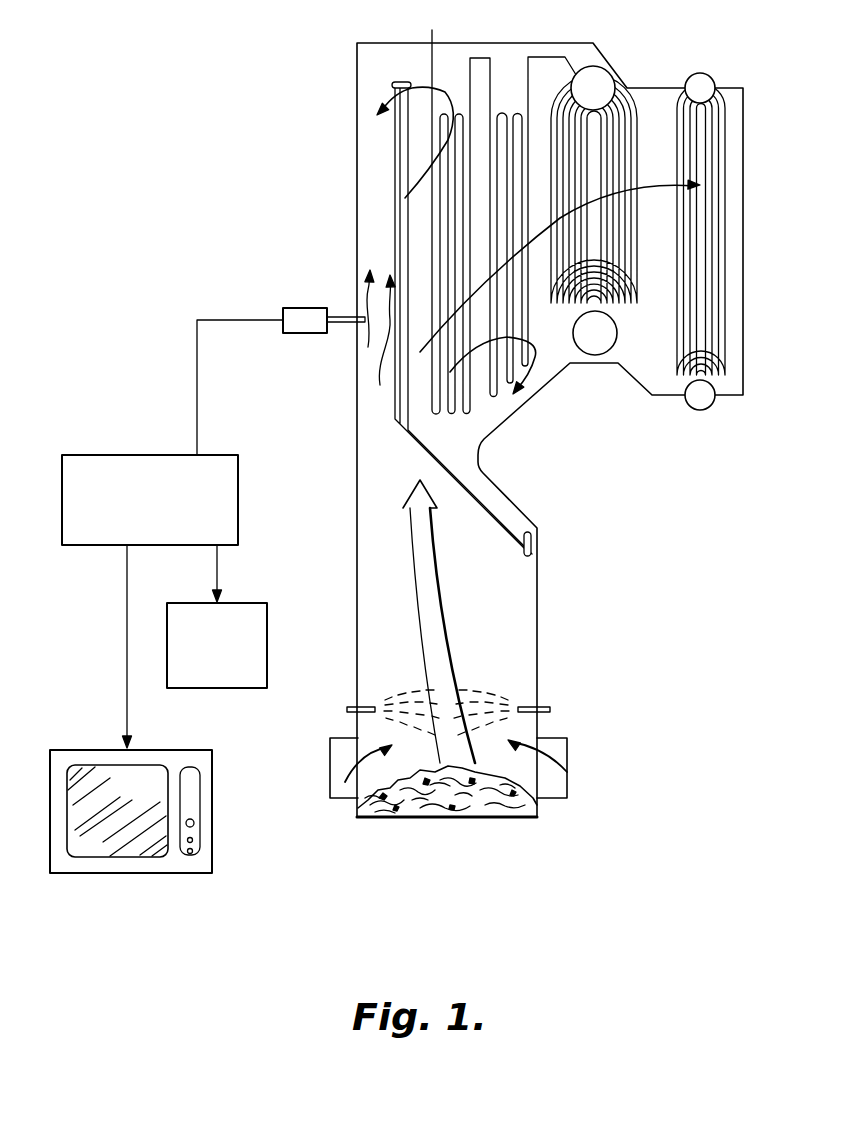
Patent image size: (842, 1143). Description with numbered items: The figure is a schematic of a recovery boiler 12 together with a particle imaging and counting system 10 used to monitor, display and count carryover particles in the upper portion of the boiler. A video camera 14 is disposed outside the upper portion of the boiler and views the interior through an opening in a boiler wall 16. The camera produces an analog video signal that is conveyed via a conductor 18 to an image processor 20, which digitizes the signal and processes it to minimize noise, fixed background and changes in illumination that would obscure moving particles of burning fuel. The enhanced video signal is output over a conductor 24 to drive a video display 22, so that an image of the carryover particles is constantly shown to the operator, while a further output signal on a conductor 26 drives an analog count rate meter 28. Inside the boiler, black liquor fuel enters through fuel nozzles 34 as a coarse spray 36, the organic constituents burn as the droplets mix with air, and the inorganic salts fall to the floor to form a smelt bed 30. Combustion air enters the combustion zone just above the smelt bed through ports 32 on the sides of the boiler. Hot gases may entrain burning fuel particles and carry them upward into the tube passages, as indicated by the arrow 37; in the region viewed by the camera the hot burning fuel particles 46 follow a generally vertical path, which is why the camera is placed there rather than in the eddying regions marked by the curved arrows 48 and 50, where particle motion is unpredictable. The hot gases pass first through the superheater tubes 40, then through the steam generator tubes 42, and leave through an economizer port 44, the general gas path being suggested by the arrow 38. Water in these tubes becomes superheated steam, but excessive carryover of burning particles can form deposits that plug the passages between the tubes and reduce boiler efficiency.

The particle imaging and counting system 10 is at (175, 371).
The recovery boiler 12 is at (556, 575).
The video camera 14 is at (297, 308).
The boiler wall 16 is at (357, 345).
The conductor 18 is at (197, 402).
The image processor 20 is at (238, 509).
The video display 22 is at (73, 753).
The conductor 24 is at (127, 655).
The conductor 26 is at (218, 567).
The analog count rate meter 28 is at (223, 690).
The smelt bed 30 is at (432, 812).
The ports 32 is at (347, 760).
The fuel nozzles 34 is at (372, 708).
The coarse spray 36 is at (394, 698).
The arrow 37 is at (423, 618).
The gas flow arrow to tube bank 38 is at (640, 187).
The superheater tubes 40 is at (482, 150).
The steam generator tubes 42 is at (630, 100).
The economizer port 44 is at (730, 207).
The hot burning fuel particles 46 is at (380, 314).
The curved arrow 48 is at (420, 82).
The curved arrow 50 is at (537, 363).